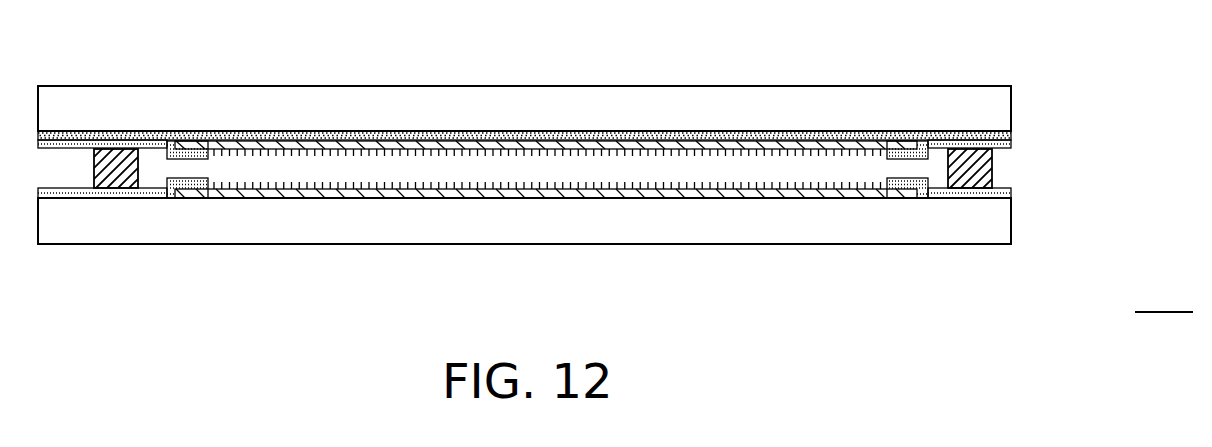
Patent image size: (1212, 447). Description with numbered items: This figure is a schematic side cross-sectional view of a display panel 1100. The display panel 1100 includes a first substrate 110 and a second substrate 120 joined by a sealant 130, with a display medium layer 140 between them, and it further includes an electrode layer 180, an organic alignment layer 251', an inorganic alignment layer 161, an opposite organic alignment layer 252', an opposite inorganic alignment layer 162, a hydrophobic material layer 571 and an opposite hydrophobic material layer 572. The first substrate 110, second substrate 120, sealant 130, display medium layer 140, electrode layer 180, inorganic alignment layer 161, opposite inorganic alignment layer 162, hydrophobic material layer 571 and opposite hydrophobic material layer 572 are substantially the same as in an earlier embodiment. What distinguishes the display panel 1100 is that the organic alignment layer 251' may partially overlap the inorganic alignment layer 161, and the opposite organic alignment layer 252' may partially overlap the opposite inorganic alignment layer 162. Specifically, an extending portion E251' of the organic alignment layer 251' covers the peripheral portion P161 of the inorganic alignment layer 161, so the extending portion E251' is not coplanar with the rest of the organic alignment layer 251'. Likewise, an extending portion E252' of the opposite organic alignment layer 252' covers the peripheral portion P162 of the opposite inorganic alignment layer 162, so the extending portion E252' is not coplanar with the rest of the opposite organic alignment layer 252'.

The first substrate 110 is at (997, 102).
The second substrate 120 is at (999, 231).
The sealant 130 is at (983, 167).
The display medium layer 140 is at (657, 172).
The inorganic alignment layer 161 is at (748, 145).
The opposite inorganic alignment layer 162 is at (798, 193).
The electrode layer 180 is at (1000, 135).
The organic alignment layer 251' is at (562, 212).
The opposite organic alignment layer 252' is at (567, 242).
The hydrophobic material layer 571 is at (368, 152).
The opposite hydrophobic material layer 572 is at (350, 188).
The peripheral portion P161 is at (907, 146).
The peripheral portion P162 is at (903, 190).
The extending portion E251' is at (863, 93).
The extending portion E252' is at (877, 239).
The display panel 1100 is at (1164, 295).